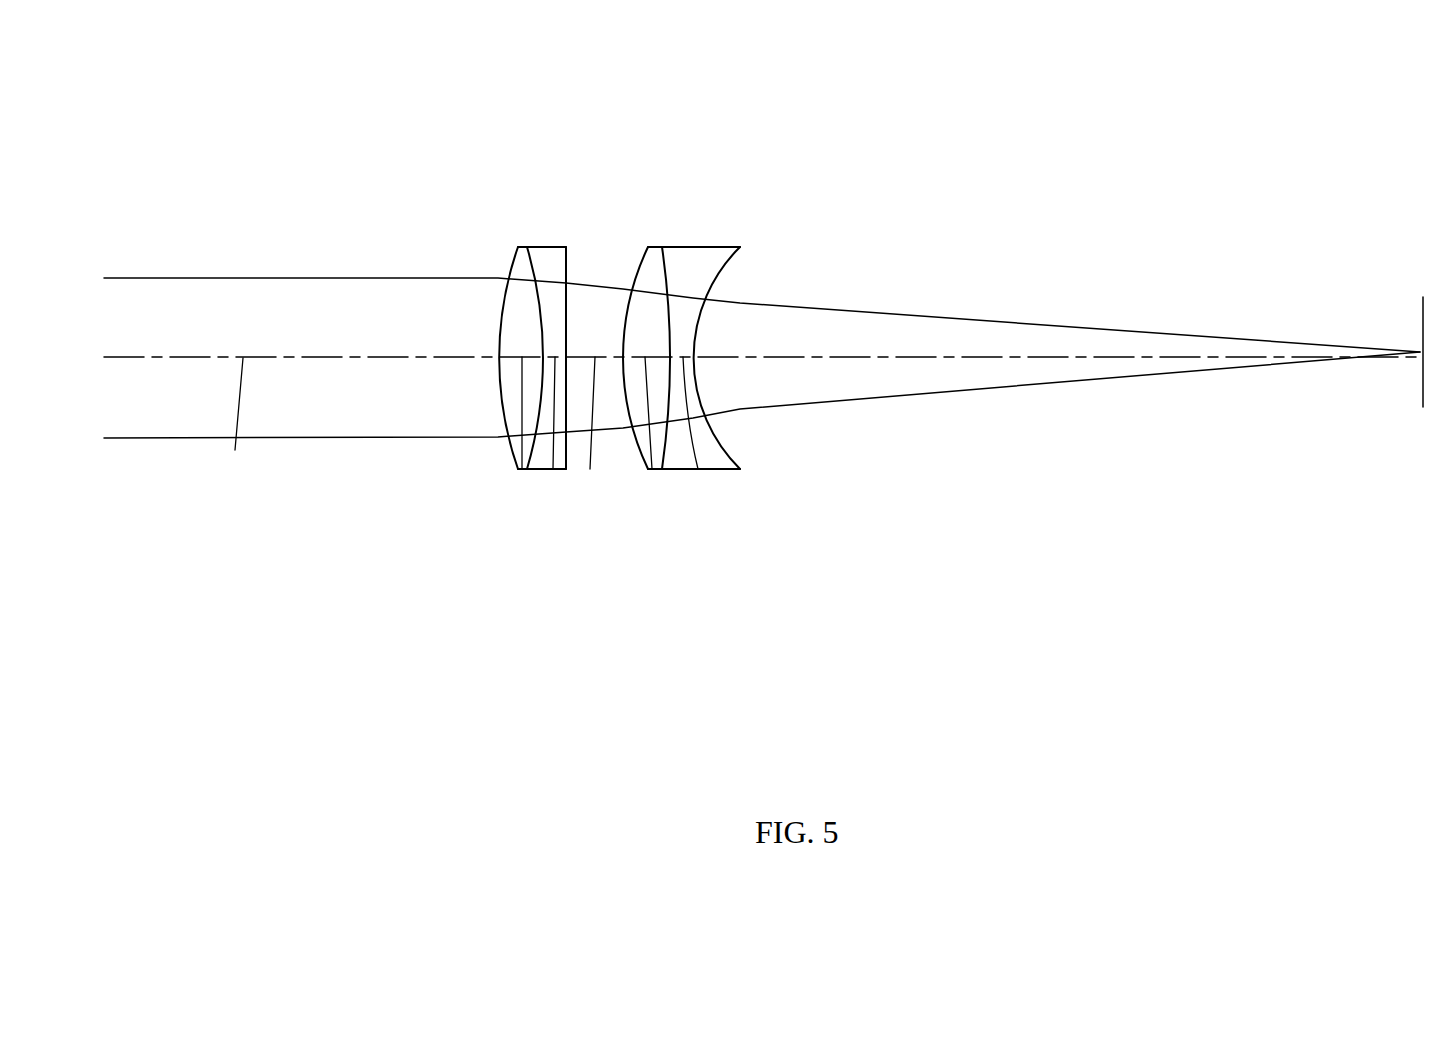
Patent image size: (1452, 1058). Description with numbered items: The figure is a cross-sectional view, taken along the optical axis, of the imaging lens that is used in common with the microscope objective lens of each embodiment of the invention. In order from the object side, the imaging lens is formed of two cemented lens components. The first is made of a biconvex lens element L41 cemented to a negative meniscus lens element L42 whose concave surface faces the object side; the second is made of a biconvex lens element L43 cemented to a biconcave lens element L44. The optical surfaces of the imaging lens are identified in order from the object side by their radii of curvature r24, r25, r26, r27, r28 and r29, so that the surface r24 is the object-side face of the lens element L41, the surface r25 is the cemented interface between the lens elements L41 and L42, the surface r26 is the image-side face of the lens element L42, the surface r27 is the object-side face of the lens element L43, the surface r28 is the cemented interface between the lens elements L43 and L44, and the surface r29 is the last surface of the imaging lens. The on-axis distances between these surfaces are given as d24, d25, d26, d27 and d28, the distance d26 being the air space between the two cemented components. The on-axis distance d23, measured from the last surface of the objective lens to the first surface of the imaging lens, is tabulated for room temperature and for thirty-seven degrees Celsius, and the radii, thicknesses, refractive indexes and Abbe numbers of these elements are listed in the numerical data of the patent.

The biconvex lens element L41 is at (538, 253).
The negative meniscus lens element L42 is at (578, 253).
The biconvex lens element L43 is at (675, 253).
The biconcave lens element L44 is at (720, 253).
The radius of curvature of first surface r24 is at (516, 252).
The radius of curvature of second surface r25 is at (538, 257).
The radius of curvature of third surface r26 is at (570, 255).
The radius of curvature of fourth surface r27 is at (638, 257).
The radius of curvature of fifth surface r28 is at (676, 260).
The radius of curvature of sixth surface r29 is at (748, 258).
The on-axis distance d23 is at (235, 450).
The on-axis distance d24 is at (522, 469).
The on-axis distance d25 is at (553, 469).
The on-axis distance d26 is at (590, 469).
The on-axis distance d27 is at (652, 469).
The on-axis distance d28 is at (698, 469).